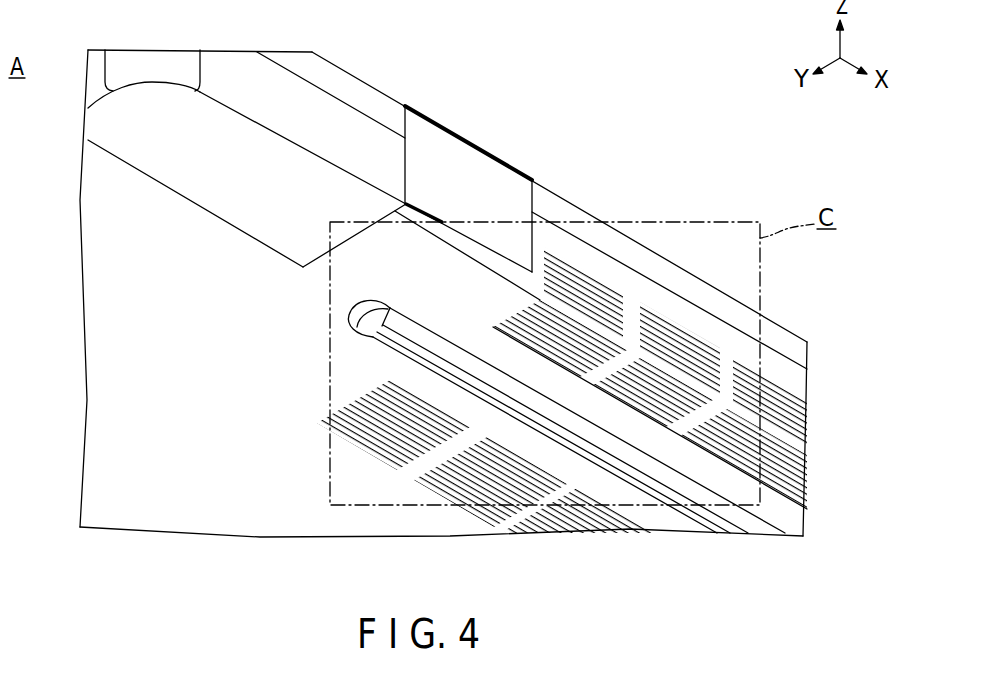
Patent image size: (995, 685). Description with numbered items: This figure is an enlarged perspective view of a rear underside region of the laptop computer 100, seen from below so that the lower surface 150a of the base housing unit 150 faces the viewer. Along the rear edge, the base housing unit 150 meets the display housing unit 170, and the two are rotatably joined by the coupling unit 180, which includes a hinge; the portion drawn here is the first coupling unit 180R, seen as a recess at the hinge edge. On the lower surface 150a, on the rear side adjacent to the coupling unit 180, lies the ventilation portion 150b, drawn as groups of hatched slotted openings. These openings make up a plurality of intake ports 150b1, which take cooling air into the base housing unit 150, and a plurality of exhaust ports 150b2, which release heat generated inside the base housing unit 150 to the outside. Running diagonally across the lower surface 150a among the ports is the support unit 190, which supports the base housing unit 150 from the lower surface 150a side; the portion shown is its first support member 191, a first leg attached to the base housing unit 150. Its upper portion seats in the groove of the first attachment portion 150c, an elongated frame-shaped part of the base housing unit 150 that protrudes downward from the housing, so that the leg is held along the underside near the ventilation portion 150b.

The laptop computer 100 is at (642, 82).
The base housing unit 150 is at (656, 297).
The lower surface 150a is at (194, 391).
The ventilation portion 150b is at (413, 297).
The intake ports 150b1 is at (360, 393).
The exhaust ports 150b2 is at (500, 322).
The first attachment portion 150c is at (699, 489).
The display housing unit 170 is at (632, 253).
The coupling unit 180 is at (467, 127).
The first coupling unit 180R is at (487, 183).
The support unit 190 is at (462, 410).
The first support member 191 is at (510, 410).